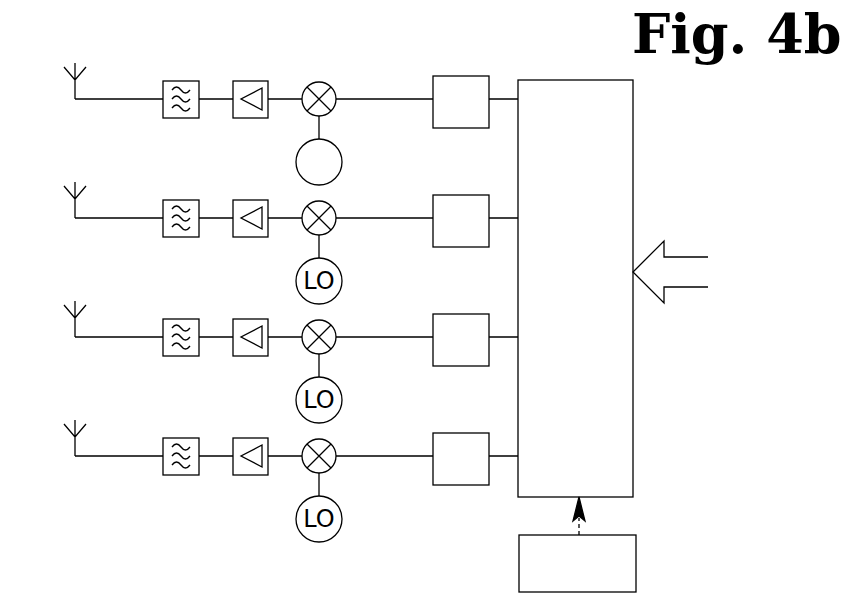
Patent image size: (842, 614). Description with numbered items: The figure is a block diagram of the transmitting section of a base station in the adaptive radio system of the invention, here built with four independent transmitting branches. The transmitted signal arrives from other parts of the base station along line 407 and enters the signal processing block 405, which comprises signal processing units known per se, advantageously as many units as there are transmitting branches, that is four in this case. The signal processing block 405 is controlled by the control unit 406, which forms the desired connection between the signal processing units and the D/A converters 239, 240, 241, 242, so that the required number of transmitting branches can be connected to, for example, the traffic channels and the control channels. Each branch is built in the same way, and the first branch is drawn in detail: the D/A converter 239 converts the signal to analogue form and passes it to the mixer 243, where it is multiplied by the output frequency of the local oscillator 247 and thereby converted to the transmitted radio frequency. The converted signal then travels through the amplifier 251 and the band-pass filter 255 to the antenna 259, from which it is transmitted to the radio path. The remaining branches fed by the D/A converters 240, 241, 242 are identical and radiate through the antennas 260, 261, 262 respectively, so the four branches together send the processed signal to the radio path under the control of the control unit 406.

The D/A converter 239 is at (433, 118).
The D/A converter 240 is at (433, 237).
The D/A converter 241 is at (433, 356).
The D/A converter 242 is at (433, 475).
The mixer 243 is at (318, 82).
The local oscillator 247 is at (296, 163).
The amplifier 251 is at (233, 108).
The band-pass filter 255 is at (163, 107).
The antenna 259 is at (73, 88).
The antenna 260 is at (73, 207).
The antenna 261 is at (73, 326).
The antenna 262 is at (73, 445).
The signal processing block 405 is at (565, 79).
The control unit 406 is at (519, 565).
The line 407 is at (683, 257).